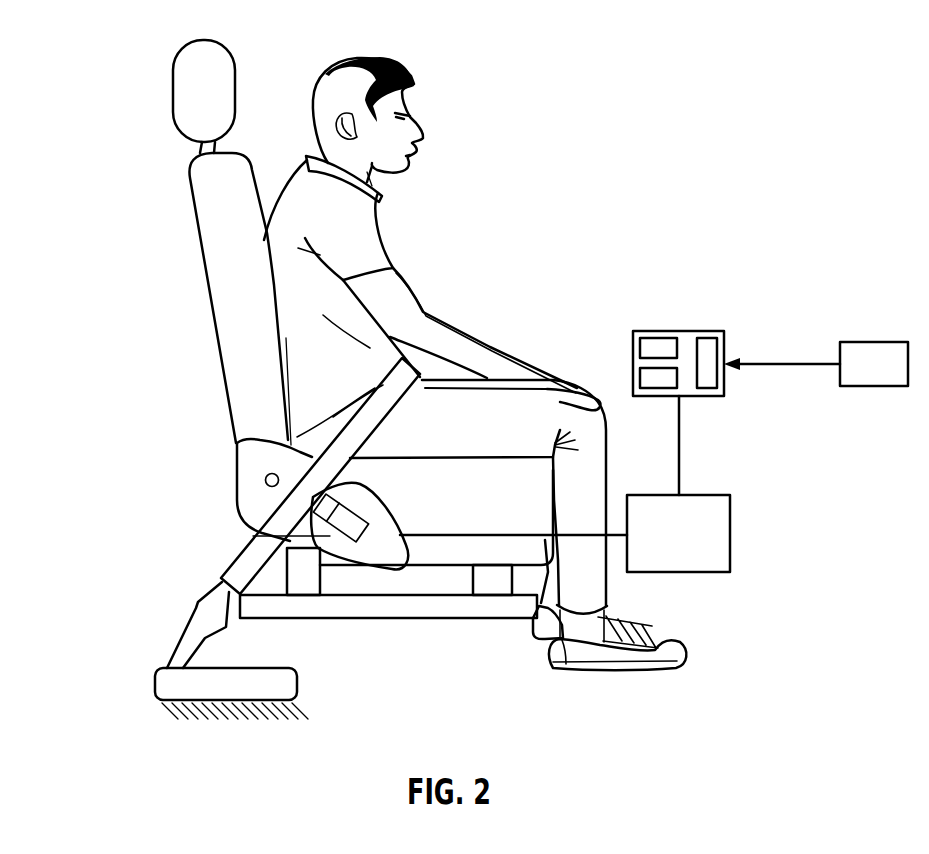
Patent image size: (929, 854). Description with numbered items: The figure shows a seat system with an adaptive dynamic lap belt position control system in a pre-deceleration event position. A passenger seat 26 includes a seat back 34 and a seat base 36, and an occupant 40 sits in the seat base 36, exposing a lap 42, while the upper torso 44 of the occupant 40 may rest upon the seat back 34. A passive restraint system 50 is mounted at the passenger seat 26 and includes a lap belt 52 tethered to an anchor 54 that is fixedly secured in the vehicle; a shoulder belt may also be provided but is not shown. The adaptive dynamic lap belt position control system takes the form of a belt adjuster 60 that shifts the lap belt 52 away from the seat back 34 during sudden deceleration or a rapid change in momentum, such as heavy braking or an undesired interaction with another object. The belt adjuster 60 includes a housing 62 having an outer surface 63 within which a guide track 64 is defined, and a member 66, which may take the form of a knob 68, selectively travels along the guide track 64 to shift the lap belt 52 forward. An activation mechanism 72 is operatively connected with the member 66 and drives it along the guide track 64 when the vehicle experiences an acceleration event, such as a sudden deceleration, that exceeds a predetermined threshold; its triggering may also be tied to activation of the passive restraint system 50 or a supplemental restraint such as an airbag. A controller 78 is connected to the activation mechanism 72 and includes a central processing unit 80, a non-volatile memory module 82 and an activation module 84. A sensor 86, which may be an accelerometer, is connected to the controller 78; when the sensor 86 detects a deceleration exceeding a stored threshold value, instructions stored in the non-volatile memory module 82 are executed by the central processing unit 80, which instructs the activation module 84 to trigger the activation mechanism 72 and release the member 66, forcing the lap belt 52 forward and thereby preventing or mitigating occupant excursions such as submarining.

The passenger seat 26 is at (178, 256).
The seat back 34 is at (210, 200).
The seat base 36 is at (470, 507).
The occupant 40 is at (420, 225).
The lap 42 is at (459, 395).
The upper torso 44 is at (287, 239).
The passive restraint system 50 is at (182, 578).
The lap belt 52 is at (243, 570).
The anchor 54 is at (207, 673).
The belt adjuster 60 is at (360, 578).
The housing 62 is at (294, 460).
The outer surface 63 is at (258, 456).
The guide track 64 is at (348, 510).
The member 66 is at (288, 453).
The knob 68 is at (265, 485).
The activation mechanism 72 is at (683, 572).
The controller 78 is at (680, 331).
The central processing unit 80 is at (640, 347).
The non-volatile memory module 82 is at (707, 338).
The activation module 84 is at (640, 378).
The sensor 86 is at (873, 342).